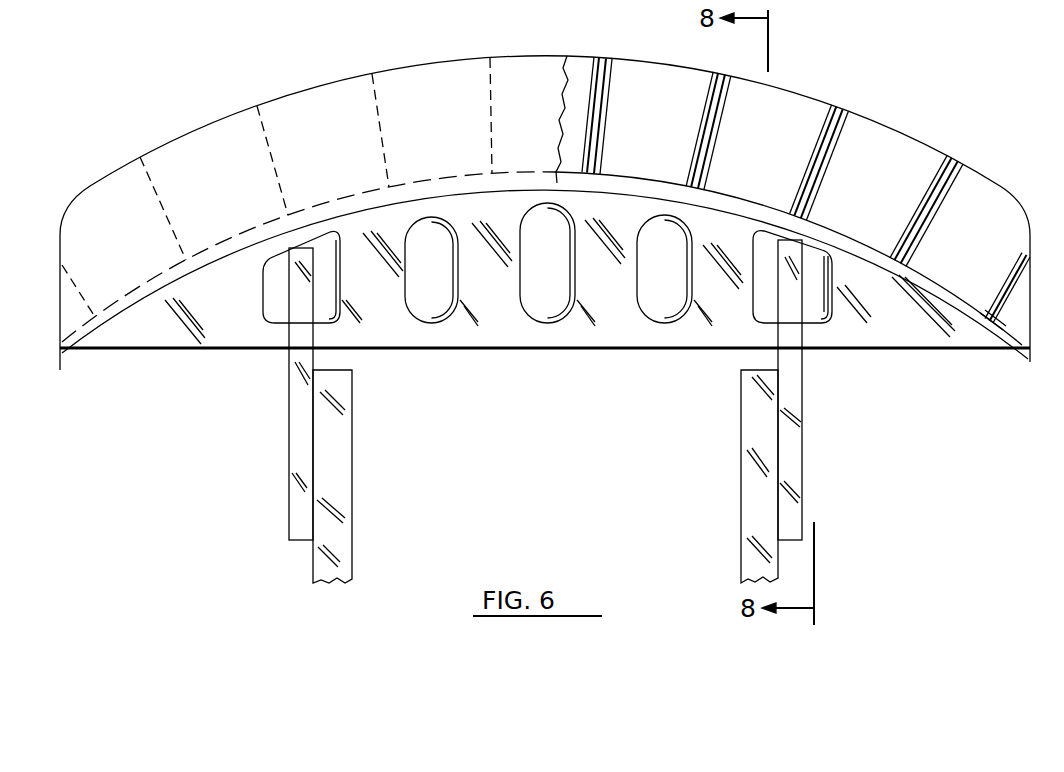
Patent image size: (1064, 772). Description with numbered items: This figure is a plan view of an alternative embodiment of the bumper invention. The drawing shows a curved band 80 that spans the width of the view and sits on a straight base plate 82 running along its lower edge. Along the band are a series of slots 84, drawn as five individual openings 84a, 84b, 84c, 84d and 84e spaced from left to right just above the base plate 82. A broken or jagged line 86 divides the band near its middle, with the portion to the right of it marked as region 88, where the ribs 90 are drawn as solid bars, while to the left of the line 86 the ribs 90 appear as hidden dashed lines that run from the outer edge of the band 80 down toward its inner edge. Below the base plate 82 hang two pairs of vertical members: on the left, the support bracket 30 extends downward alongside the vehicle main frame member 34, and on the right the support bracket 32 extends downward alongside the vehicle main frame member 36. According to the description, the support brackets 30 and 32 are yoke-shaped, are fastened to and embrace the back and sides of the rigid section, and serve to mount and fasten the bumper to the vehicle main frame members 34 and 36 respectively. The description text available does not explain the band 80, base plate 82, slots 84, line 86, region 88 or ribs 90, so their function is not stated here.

The curved band 80 is at (340, 74).
The base plate 82 is at (162, 353).
The slots 84 is at (515, 275).
The slot a 84a is at (267, 310).
The slot b 84b is at (423, 307).
The slot c 84c is at (530, 307).
The slot d 84d is at (665, 307).
The slot e 84e is at (763, 312).
The break line 86 is at (567, 72).
The rear wall of band 88 is at (884, 116).
The ribs 90 is at (147, 292).
The support bracket 30 is at (288, 394).
The support bracket 32 is at (795, 395).
The vehicle main frame member 34 is at (345, 396).
The vehicle main frame member 36 is at (745, 395).